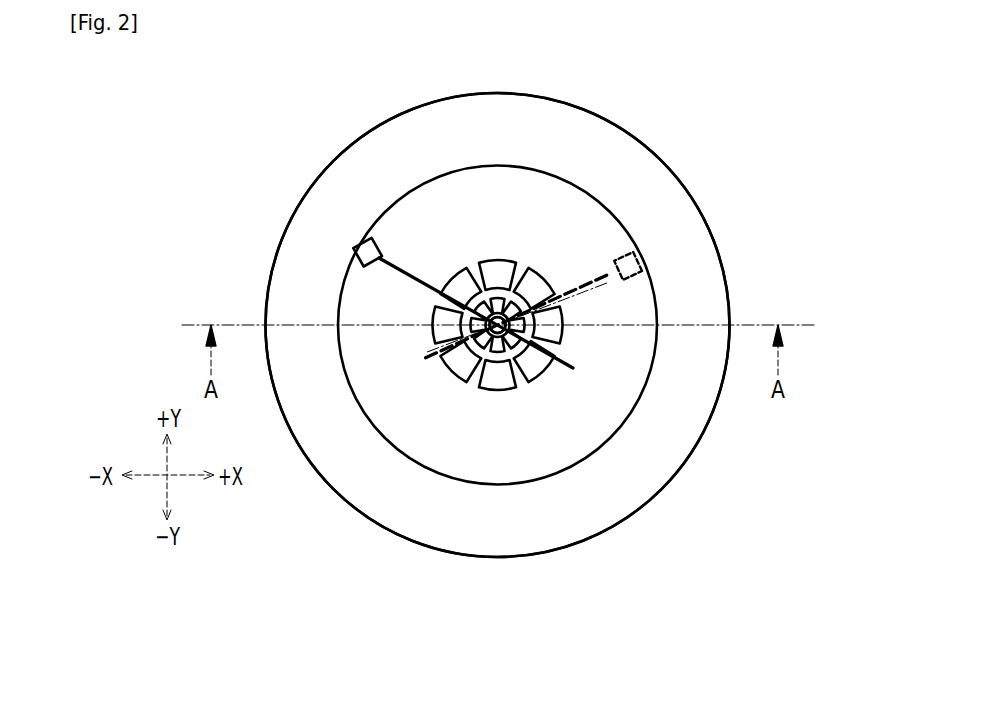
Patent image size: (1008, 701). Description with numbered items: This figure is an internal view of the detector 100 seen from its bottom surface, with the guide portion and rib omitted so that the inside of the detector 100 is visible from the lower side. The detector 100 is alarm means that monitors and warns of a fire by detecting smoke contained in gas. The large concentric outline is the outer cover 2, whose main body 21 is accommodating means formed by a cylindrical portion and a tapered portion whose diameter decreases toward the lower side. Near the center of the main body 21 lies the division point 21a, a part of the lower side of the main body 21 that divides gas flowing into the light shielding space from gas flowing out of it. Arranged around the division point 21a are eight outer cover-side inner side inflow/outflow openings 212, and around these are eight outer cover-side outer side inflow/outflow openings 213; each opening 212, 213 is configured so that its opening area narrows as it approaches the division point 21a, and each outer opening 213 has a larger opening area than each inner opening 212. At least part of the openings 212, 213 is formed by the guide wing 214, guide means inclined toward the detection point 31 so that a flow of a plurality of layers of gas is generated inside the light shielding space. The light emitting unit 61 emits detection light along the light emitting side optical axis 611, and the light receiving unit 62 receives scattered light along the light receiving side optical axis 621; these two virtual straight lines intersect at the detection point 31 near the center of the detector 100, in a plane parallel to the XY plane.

The detector 100 is at (334, 102).
The outer cover 2 is at (708, 290).
The main body 21 is at (585, 325).
The division point 21a is at (533, 373).
The detection point 31 is at (675, 397).
The light emitting unit 61 is at (362, 240).
The light emitting side optical axis 611 is at (407, 272).
The light receiving unit 62 is at (628, 252).
The light receiving side optical axis 621 is at (580, 285).
The outer cover-side inner side inflow/outflow opening 212 is at (475, 342).
The outer cover-side outer side inflow/outflow opening 213 is at (490, 381).
The guide wing 214 is at (498, 262).